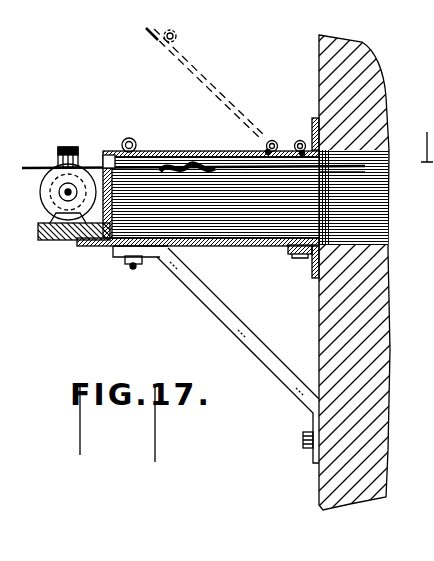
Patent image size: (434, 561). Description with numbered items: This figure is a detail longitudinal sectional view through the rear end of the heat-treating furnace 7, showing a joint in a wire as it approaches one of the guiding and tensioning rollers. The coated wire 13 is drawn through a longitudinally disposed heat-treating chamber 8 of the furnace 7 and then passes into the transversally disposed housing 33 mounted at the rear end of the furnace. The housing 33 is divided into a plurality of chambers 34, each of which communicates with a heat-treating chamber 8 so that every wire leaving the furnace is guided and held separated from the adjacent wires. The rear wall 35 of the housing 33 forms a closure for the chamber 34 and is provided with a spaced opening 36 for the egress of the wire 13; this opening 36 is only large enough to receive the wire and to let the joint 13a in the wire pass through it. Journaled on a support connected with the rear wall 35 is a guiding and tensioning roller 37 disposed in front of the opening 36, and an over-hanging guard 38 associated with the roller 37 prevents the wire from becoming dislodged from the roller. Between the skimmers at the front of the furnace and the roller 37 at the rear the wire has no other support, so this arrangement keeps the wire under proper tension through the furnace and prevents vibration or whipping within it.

The heat-treating furnace 7 is at (384, 310).
The heat-treating chamber 8 is at (373, 215).
The wire 13 is at (365, 166).
The joint 13a is at (178, 162).
The housing 33 is at (221, 244).
The chamber 34 is at (292, 242).
The rear wall 35 is at (110, 232).
The opening 36 is at (104, 158).
The guiding and tensioning roller 37 is at (55, 168).
The over-hanging guard 38 is at (62, 147).